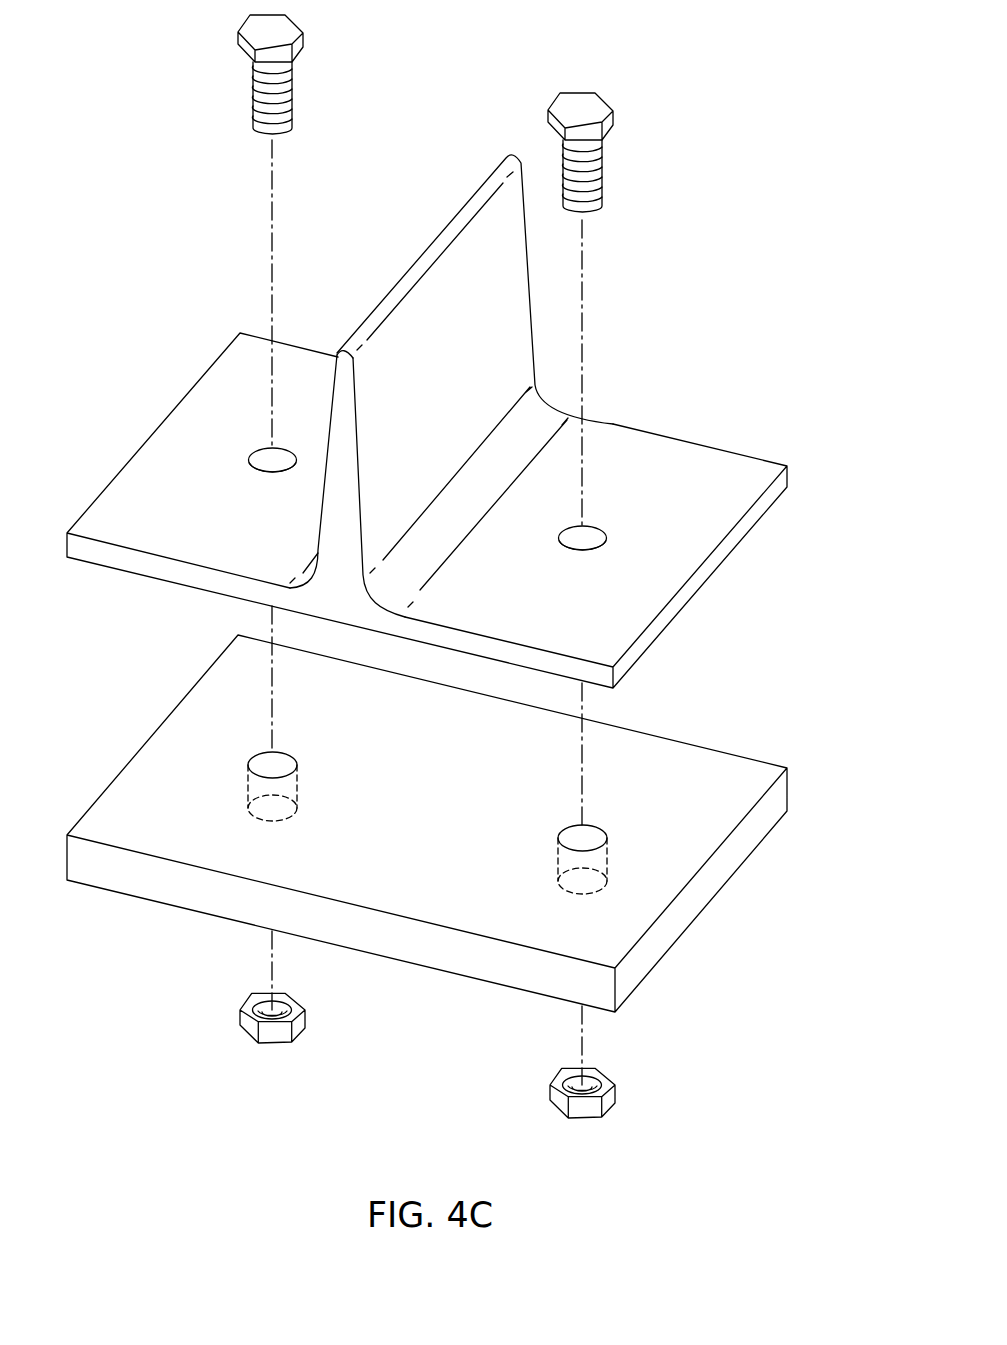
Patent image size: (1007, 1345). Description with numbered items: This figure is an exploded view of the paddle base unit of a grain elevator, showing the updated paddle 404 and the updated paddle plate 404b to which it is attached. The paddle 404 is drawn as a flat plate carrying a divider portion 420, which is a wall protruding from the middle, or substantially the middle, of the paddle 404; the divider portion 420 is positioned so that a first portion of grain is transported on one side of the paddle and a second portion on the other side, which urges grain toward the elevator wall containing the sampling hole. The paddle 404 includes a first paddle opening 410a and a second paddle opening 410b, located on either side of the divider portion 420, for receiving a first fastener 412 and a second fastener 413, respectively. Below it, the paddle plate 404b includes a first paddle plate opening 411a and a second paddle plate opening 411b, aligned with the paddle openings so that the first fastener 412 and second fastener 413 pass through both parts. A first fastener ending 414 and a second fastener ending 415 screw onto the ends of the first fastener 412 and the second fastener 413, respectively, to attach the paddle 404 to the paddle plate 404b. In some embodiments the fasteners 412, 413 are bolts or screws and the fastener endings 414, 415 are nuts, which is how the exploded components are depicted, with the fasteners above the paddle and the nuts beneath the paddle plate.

The paddle 404 is at (693, 464).
The updated paddle plate 404b is at (675, 787).
The first paddle opening 410a is at (250, 458).
The second paddle opening 410b is at (607, 540).
The first paddle plate opening 411a is at (253, 758).
The second paddle plate opening 411b is at (607, 835).
The first fastener 412 is at (280, 29).
The second fastener 413 is at (592, 103).
The first fastener ending 414 is at (250, 1027).
The second fastener ending 415 is at (560, 1102).
The divider portion 420 is at (433, 242).